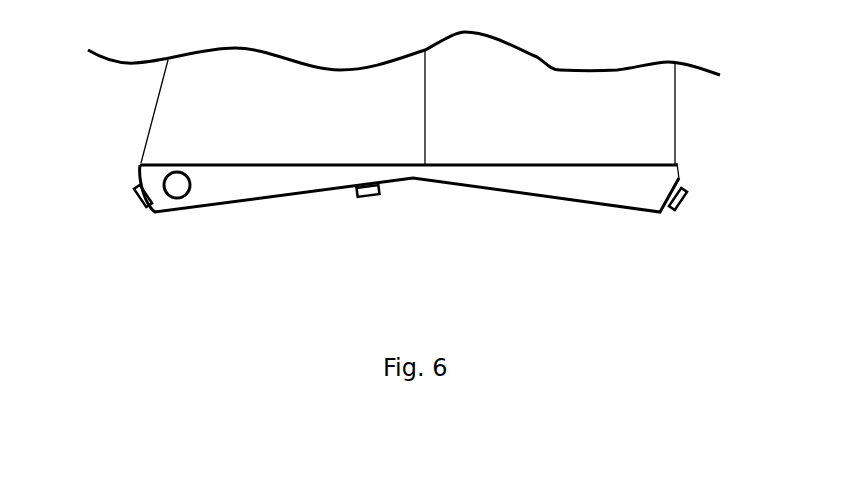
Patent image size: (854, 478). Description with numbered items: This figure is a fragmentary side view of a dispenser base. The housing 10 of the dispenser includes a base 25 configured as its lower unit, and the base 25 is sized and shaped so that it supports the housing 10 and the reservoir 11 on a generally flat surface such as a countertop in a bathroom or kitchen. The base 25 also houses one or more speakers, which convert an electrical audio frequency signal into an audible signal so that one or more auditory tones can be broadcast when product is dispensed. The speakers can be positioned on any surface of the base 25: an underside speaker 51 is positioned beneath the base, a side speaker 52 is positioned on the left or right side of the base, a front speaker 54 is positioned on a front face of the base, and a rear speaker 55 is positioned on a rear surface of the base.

The housing 10 is at (172, 118).
The reservoir 11 is at (617, 90).
The base 25 is at (678, 178).
The underside speaker 51 is at (367, 197).
The side speaker 52 is at (177, 187).
The front speaker 54 is at (138, 198).
The rear speaker 55 is at (683, 200).